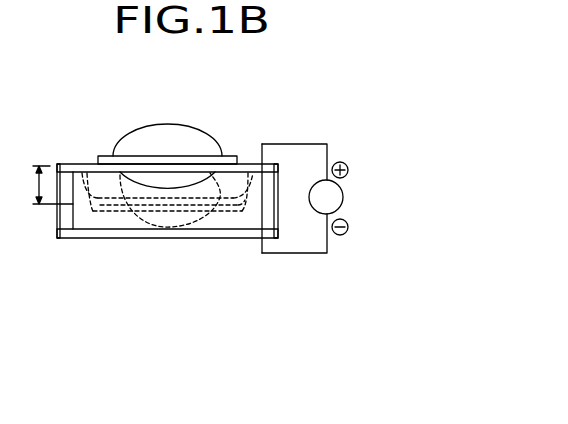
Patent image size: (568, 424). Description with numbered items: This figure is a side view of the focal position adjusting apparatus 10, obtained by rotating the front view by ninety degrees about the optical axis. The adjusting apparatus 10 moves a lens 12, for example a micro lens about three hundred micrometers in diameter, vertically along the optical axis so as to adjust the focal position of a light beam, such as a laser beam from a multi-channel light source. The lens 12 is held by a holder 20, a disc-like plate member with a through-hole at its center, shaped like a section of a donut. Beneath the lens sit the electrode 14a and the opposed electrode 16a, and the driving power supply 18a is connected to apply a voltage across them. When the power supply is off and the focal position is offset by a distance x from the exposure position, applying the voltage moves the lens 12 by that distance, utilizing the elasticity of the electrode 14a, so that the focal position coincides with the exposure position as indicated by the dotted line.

The focal position adjusting apparatus 10 is at (150, 213).
The lens 12 is at (177, 135).
The electrode 14a is at (82, 163).
The opposed electrode 16a is at (123, 235).
The driving power supply 18a is at (343, 197).
The holder 20 is at (228, 155).